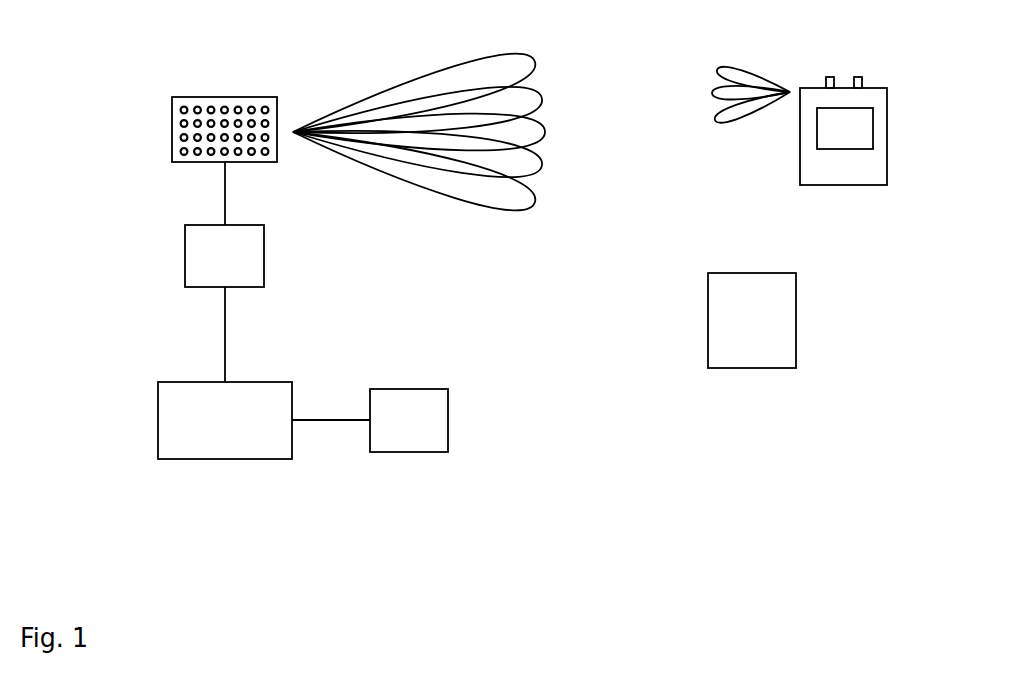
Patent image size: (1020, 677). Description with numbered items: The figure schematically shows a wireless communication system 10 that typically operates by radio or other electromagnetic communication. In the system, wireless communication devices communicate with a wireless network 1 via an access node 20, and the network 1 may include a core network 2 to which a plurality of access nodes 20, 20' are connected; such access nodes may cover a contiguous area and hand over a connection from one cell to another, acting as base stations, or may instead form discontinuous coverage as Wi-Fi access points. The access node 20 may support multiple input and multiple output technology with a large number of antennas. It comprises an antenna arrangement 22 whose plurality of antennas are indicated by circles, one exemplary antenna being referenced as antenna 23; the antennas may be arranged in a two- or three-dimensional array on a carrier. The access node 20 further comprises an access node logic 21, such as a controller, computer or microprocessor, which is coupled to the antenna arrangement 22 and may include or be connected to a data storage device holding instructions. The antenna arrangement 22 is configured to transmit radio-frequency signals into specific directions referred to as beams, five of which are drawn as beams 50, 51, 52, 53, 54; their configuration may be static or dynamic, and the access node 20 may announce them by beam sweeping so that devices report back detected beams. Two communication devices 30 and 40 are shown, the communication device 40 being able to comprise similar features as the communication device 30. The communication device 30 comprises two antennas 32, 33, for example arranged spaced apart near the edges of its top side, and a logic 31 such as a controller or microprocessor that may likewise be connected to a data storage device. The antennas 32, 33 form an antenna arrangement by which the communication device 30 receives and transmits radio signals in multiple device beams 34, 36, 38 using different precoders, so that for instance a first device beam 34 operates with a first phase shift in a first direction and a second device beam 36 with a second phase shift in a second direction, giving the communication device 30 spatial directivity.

The wireless network 1 is at (257, 483).
The core network 2 is at (210, 438).
The wireless communication system 10 is at (633, 490).
The access node 20 is at (173, 166).
The access node 20' is at (409, 420).
The access node logic 21 is at (210, 273).
The antenna arrangement 22 is at (172, 160).
The antenna 23 is at (184, 110).
The communication device 30 is at (857, 188).
The logic 31 is at (830, 138).
The antenna 32 is at (827, 72).
The antenna 33 is at (857, 70).
The device beam 34 is at (727, 63).
The device beam 36 is at (715, 88).
The device beam 38 is at (732, 125).
The communication device 40 is at (767, 372).
The beam 50 is at (508, 56).
The beam 51 is at (535, 92).
The beam 52 is at (537, 145).
The beam 53 is at (530, 173).
The beam 54 is at (513, 208).